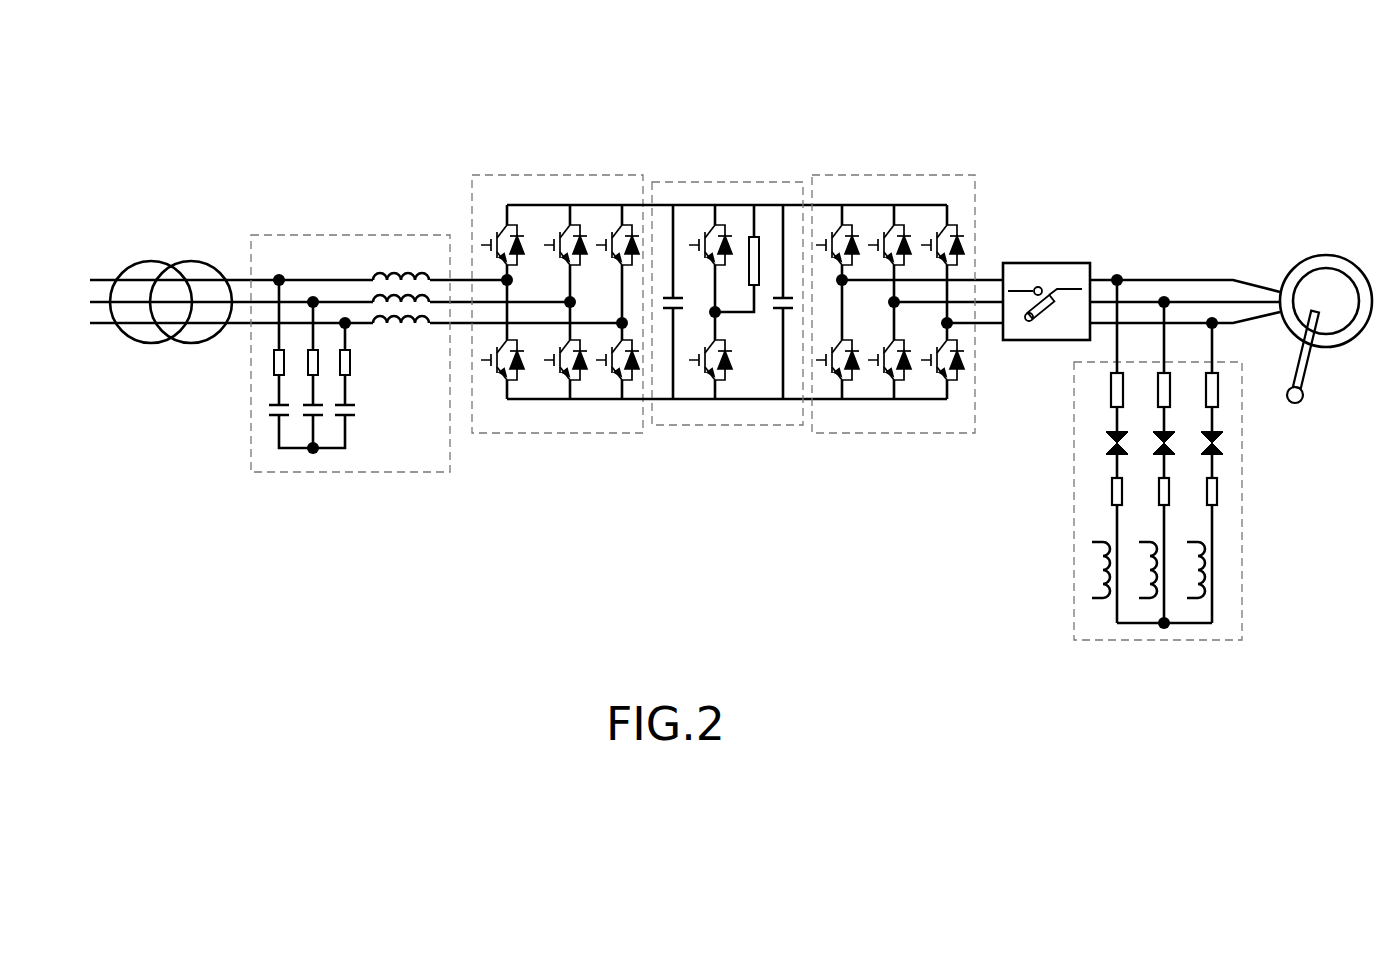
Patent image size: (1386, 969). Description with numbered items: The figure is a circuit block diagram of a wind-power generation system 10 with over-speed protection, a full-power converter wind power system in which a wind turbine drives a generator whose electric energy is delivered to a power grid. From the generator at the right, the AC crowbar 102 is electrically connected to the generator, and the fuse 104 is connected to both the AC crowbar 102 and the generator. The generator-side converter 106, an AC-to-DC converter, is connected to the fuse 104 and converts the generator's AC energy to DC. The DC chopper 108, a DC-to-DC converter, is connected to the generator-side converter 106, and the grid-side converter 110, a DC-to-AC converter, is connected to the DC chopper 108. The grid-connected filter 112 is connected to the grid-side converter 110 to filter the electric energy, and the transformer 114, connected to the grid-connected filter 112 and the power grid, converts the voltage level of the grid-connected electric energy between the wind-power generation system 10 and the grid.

The wind-power generation system 10 is at (739, 41).
The AC crowbar 102 is at (1227, 592).
The fuse 104 is at (1042, 270).
The generator-side converter 106 is at (892, 180).
The DC chopper 108 is at (720, 192).
The grid-side converter 110 is at (557, 185).
The grid-connected filter 112 is at (310, 240).
The transformer 114 is at (168, 258).